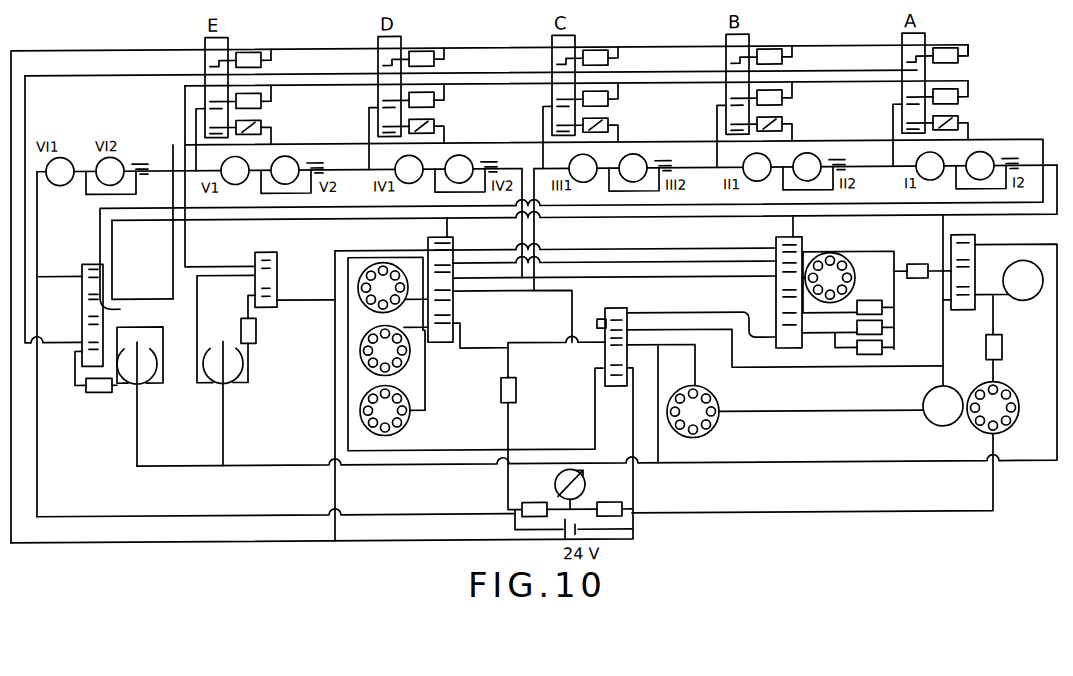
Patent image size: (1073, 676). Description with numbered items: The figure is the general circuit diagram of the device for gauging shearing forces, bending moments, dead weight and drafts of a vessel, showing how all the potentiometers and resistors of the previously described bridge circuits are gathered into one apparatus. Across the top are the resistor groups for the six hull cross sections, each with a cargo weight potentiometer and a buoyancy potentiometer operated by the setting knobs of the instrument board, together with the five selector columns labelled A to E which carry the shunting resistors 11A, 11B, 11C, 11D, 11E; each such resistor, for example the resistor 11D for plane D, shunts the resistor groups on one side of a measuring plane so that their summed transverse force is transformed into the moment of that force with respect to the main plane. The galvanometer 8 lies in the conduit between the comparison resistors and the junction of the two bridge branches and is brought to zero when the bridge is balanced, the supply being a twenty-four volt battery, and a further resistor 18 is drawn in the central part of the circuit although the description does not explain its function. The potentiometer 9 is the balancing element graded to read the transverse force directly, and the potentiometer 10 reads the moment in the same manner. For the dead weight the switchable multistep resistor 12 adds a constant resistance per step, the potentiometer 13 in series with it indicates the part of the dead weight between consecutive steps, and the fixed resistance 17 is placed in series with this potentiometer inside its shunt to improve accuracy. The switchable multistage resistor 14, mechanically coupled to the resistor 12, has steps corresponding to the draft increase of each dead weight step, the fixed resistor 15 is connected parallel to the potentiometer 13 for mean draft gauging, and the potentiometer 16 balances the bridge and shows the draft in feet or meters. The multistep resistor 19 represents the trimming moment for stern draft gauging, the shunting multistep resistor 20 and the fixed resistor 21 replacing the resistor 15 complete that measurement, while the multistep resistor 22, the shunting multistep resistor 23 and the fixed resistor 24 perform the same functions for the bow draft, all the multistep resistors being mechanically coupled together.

The galvanometer 8 is at (555, 489).
The potentiometer 9 is at (223, 348).
The potentiometer 10 is at (130, 352).
The resistor 11A is at (963, 117).
The resistor 11B is at (787, 118).
The resistor 11C is at (613, 119).
The resistor 11D is at (440, 120).
The resistor 11E is at (265, 121).
The switchable multistep resistor 12 is at (990, 400).
The potentiometer 13 is at (1027, 298).
The switchable multistage resistor 14 is at (700, 398).
The fixed resistor 15 is at (882, 353).
The potentiometer 16 is at (943, 405).
The fixed resistance 17 is at (917, 270).
The resistor 18 is at (501, 387).
The switchable multistage resistor 19 is at (846, 277).
The switchable multistep resistor 20 is at (388, 392).
The fixed resistor 21 is at (864, 311).
The switchable multistep resistor 22 is at (378, 312).
The switchable multistep resistor 23 is at (378, 368).
The fixed resistor 24 is at (882, 333).